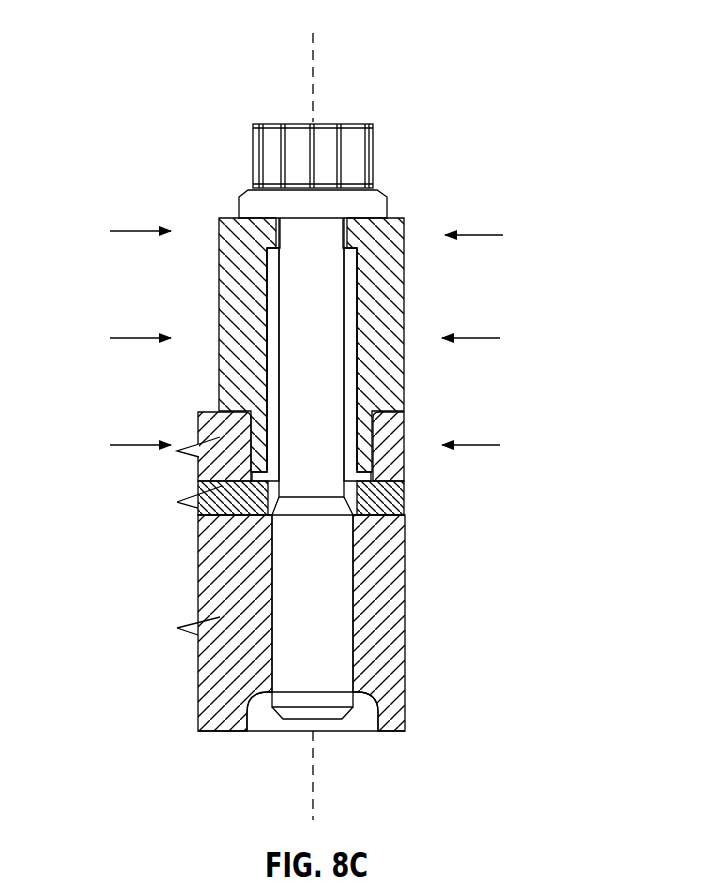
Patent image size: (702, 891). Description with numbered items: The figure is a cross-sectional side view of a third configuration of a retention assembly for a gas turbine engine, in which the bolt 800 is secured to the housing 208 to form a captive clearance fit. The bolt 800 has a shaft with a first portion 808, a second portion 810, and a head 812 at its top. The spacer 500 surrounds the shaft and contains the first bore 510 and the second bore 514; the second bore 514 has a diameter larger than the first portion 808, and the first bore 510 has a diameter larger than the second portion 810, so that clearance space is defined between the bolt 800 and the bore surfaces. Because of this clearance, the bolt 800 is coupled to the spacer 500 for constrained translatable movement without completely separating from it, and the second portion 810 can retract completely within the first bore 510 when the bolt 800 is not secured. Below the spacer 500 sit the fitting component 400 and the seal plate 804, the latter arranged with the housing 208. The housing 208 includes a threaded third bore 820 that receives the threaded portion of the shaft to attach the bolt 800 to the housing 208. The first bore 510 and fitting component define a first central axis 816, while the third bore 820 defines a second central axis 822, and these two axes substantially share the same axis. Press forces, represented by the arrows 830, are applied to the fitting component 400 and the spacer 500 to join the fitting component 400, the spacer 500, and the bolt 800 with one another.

The first central axis 816 is at (311, 44).
The bolt 800 is at (349, 153).
The head 812 is at (374, 166).
The spacer 500 is at (354, 325).
The second bore 514 is at (350, 224).
The first bore 510 is at (357, 353).
The first portion 808 is at (273, 328).
The third bore 820 is at (359, 654).
The fitting component 400 is at (407, 451).
The seal plate 804 is at (407, 491).
The housing 208 is at (302, 623).
The second portion 810 is at (270, 647).
The second central axis 822 is at (311, 790).
The arrows 830 is at (135, 231).